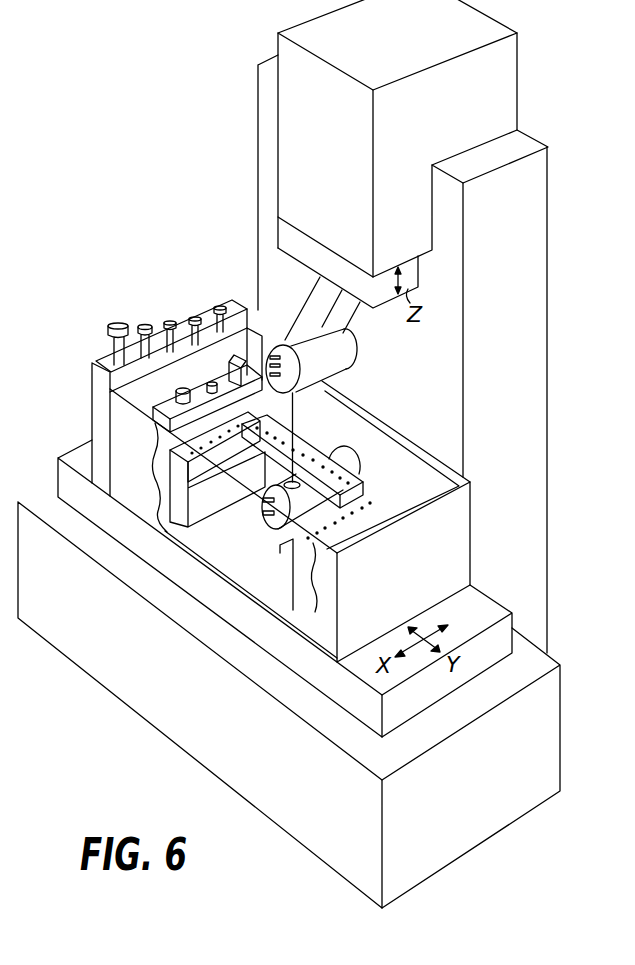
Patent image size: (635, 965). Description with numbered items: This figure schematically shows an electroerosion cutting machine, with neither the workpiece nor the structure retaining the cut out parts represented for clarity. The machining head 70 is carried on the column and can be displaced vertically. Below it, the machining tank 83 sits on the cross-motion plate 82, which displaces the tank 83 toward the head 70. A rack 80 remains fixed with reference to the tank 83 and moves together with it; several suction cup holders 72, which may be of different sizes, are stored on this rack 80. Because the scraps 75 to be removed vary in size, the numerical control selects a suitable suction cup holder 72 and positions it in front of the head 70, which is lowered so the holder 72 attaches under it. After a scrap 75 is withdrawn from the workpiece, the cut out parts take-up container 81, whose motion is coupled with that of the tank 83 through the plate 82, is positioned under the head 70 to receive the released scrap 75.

The machining head 70 is at (340, 358).
The suction cup holders 72 is at (220, 306).
The scraps 75 is at (186, 405).
The rack 80 is at (98, 383).
The cut out parts take-up container 81 is at (130, 418).
The cross-motion plate 82 is at (492, 607).
The machining tank 83 is at (457, 540).